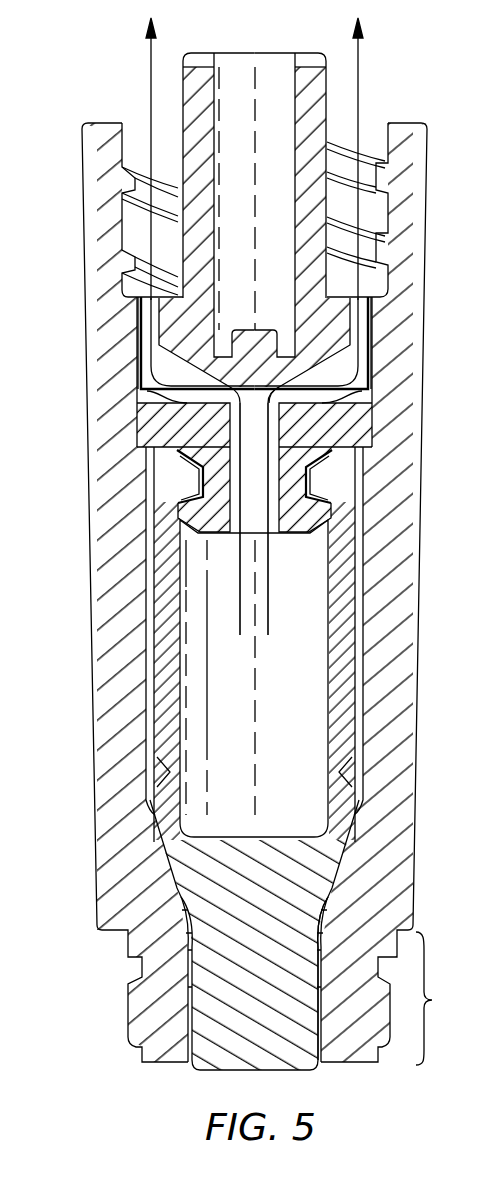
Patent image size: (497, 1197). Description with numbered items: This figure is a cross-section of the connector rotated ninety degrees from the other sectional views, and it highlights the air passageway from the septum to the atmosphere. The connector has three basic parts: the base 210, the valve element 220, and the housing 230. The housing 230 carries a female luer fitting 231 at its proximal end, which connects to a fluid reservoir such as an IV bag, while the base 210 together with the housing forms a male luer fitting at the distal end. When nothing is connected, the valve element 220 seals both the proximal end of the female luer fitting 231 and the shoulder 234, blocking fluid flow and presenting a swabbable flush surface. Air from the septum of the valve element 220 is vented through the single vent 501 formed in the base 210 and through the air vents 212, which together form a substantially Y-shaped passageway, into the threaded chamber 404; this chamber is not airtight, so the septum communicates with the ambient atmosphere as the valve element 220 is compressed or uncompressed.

The base 210 is at (328, 90).
The threaded chamber 404 is at (370, 283).
The air vents 212 is at (170, 371).
The single vent 501 is at (240, 430).
The housing 230 is at (420, 473).
The female luer fitting 231 is at (228, 687).
The shoulder 234 is at (330, 902).
The valve element 220 is at (280, 1070).